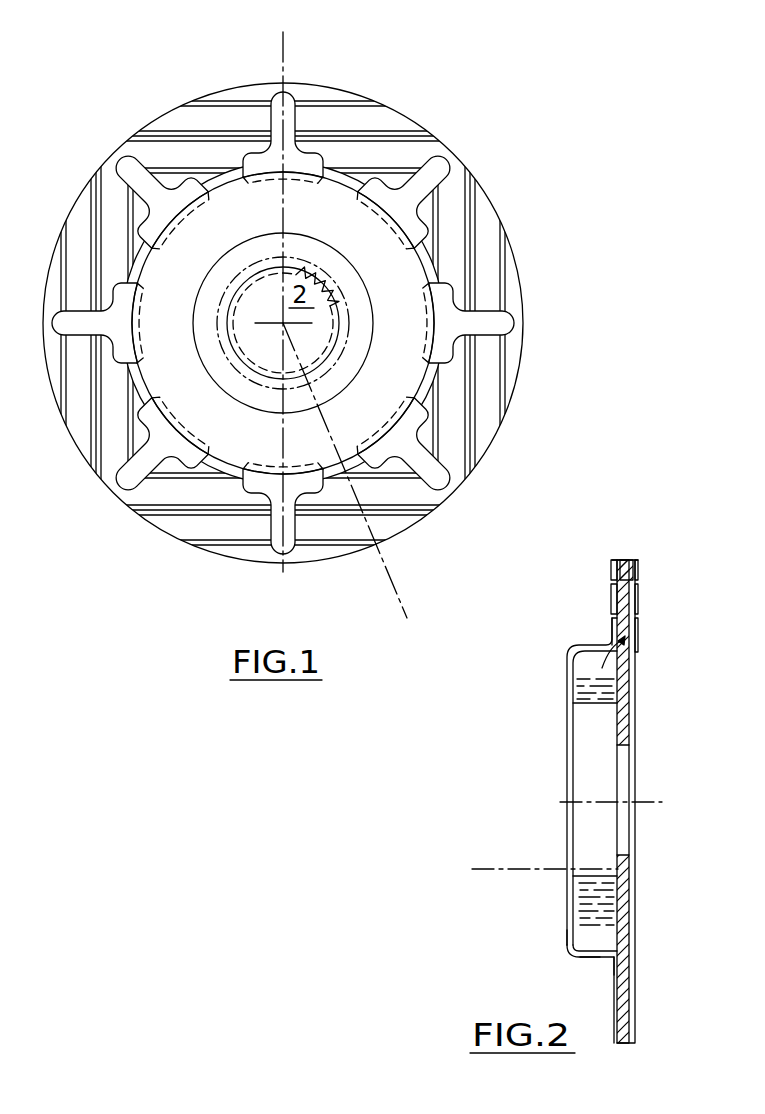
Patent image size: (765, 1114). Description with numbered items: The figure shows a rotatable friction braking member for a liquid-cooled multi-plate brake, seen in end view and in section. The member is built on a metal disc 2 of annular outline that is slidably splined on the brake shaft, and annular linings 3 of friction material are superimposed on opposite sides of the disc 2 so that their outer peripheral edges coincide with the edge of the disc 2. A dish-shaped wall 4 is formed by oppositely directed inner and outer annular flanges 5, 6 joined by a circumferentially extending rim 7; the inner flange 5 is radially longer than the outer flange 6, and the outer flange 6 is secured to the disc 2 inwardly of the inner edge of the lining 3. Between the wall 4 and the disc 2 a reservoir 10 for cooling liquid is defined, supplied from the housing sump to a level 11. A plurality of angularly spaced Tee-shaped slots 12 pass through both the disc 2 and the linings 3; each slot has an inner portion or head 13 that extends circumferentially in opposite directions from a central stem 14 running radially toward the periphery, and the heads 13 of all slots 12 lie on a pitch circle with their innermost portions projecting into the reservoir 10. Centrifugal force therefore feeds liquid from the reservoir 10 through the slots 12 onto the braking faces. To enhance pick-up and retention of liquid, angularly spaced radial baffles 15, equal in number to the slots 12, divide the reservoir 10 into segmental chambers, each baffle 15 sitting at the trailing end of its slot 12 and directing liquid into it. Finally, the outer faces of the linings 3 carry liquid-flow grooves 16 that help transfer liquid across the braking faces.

In FIG. 1, the metal disc 2 is at (292, 37).
In FIG. 2, the metal disc 2 is at (624, 572).
In FIG. 2, the annular linings 3 is at (614, 569).
In FIG. 2, the wall 4 is at (561, 693).
In FIG. 2, the inner annular flange 5 is at (567, 938).
In FIG. 2, the outer annular flange 6 is at (614, 962).
In FIG. 2, the circumferentially extending rim 7 is at (590, 958).
In FIG. 2, the reservoir 10 is at (582, 886).
In FIG. 2, the liquid level 11 is at (478, 868).
In FIG. 1, the slots 12 is at (425, 172).
In FIG. 1, the inner portion (head of the Tee) 13 is at (453, 305).
In FIG. 1, the central stem 14 is at (137, 174).
In FIG. 2, the radial baffles 15 is at (583, 667).
In FIG. 1, the liquid-flow grooves 16 is at (355, 102).
In FIG. 2, the liquid-flow grooves 16 is at (637, 584).